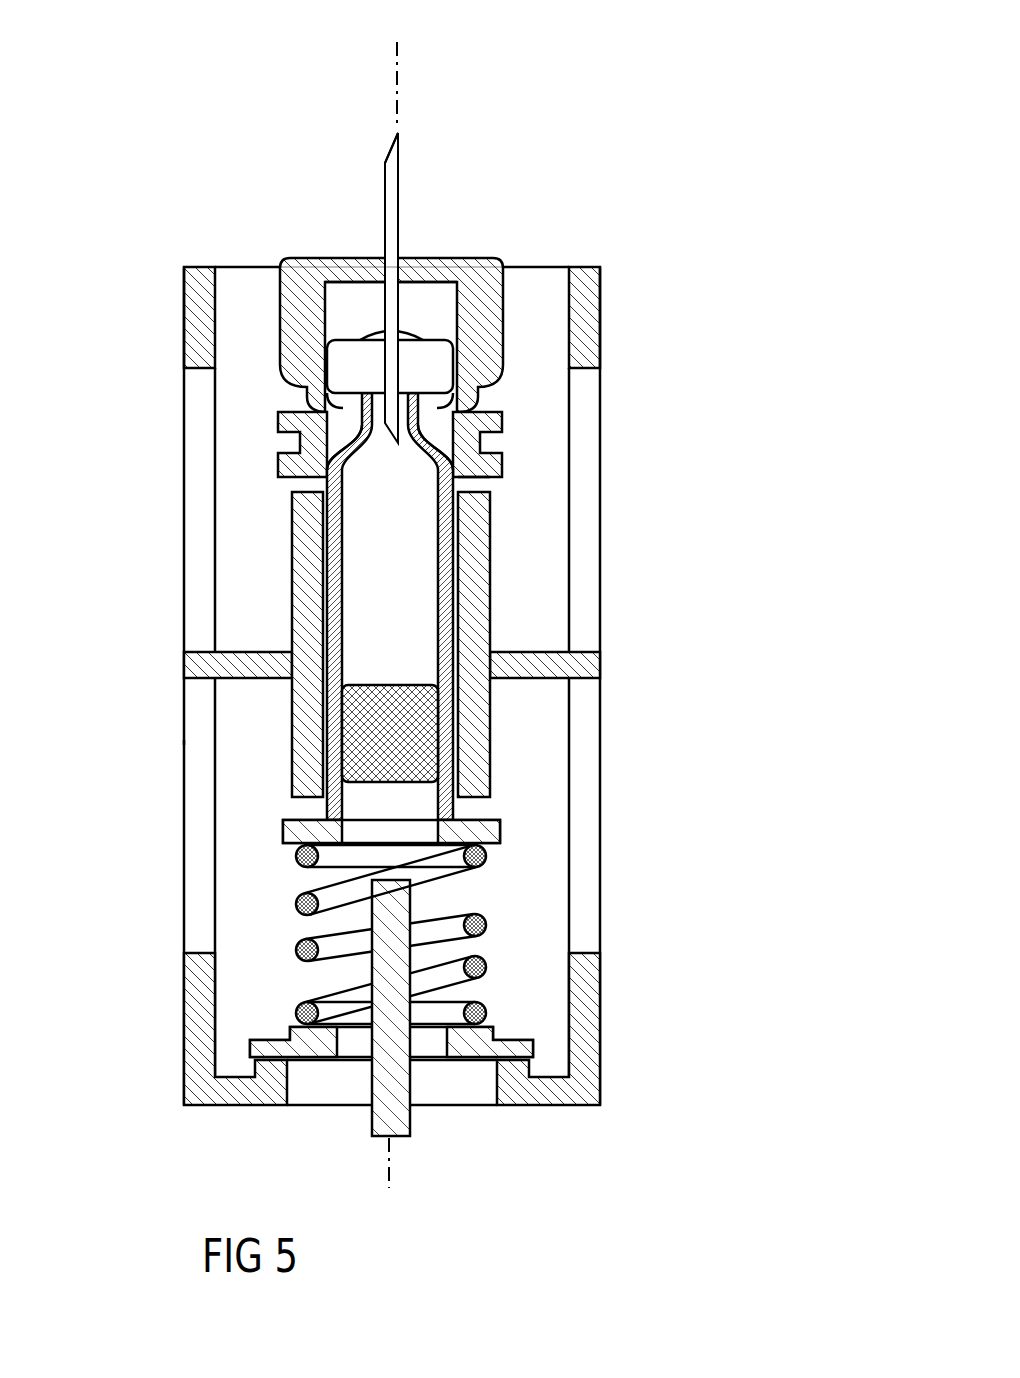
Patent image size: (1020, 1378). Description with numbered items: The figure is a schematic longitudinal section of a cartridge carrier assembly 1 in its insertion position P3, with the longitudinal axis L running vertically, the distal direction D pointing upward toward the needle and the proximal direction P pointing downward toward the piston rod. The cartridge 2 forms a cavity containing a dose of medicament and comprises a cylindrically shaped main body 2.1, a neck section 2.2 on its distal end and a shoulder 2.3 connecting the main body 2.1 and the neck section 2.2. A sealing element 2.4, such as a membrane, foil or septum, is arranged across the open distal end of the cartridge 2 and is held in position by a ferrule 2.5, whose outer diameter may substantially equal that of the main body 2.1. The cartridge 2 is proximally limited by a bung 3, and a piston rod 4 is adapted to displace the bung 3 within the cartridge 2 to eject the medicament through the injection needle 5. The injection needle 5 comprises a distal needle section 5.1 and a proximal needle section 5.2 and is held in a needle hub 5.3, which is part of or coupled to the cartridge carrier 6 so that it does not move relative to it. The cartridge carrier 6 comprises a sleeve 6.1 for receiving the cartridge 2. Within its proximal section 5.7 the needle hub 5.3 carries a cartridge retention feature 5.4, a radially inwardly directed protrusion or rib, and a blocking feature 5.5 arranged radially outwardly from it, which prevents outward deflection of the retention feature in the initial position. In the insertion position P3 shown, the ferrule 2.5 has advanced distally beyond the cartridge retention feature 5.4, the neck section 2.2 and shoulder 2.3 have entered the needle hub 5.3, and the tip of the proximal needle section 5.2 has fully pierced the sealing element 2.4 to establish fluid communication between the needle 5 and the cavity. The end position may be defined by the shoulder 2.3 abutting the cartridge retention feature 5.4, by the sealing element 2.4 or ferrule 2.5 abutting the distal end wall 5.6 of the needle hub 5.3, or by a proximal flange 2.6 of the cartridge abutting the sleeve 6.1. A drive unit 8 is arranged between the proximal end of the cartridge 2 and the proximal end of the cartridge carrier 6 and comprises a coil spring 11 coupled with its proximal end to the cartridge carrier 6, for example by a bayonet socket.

The cartridge carrier assembly 1 is at (607, 112).
The cartridge 2 is at (455, 592).
The main body 2.1 is at (390, 606).
The neck section 2.2 is at (343, 407).
The shoulder 2.3 is at (452, 443).
The sealing element 2.4 is at (362, 337).
The ferrule 2.5 is at (358, 372).
The flange 2.6 is at (293, 835).
The bung 3 is at (418, 763).
The piston rod 4 is at (397, 1043).
The injection needle 5 is at (393, 238).
The distal needle section 5.1 is at (387, 158).
The proximal needle section 5.2 is at (355, 433).
The needle hub 5.3 is at (490, 318).
The cartridge retention feature 5.4 is at (457, 413).
The blocking feature 5.5 is at (498, 422).
The distal end wall 5.6 is at (420, 267).
The proximal section 5.7 is at (467, 470).
The cartridge carrier 6 is at (195, 1033).
The sleeve 6.1 is at (308, 763).
The drive unit 8 is at (437, 1072).
The spring 11 is at (490, 857).
The insertion position P3 is at (148, 742).
The distal direction D is at (396, 67).
The longitudinal axis L is at (398, 100).
The proximal direction P is at (390, 1152).